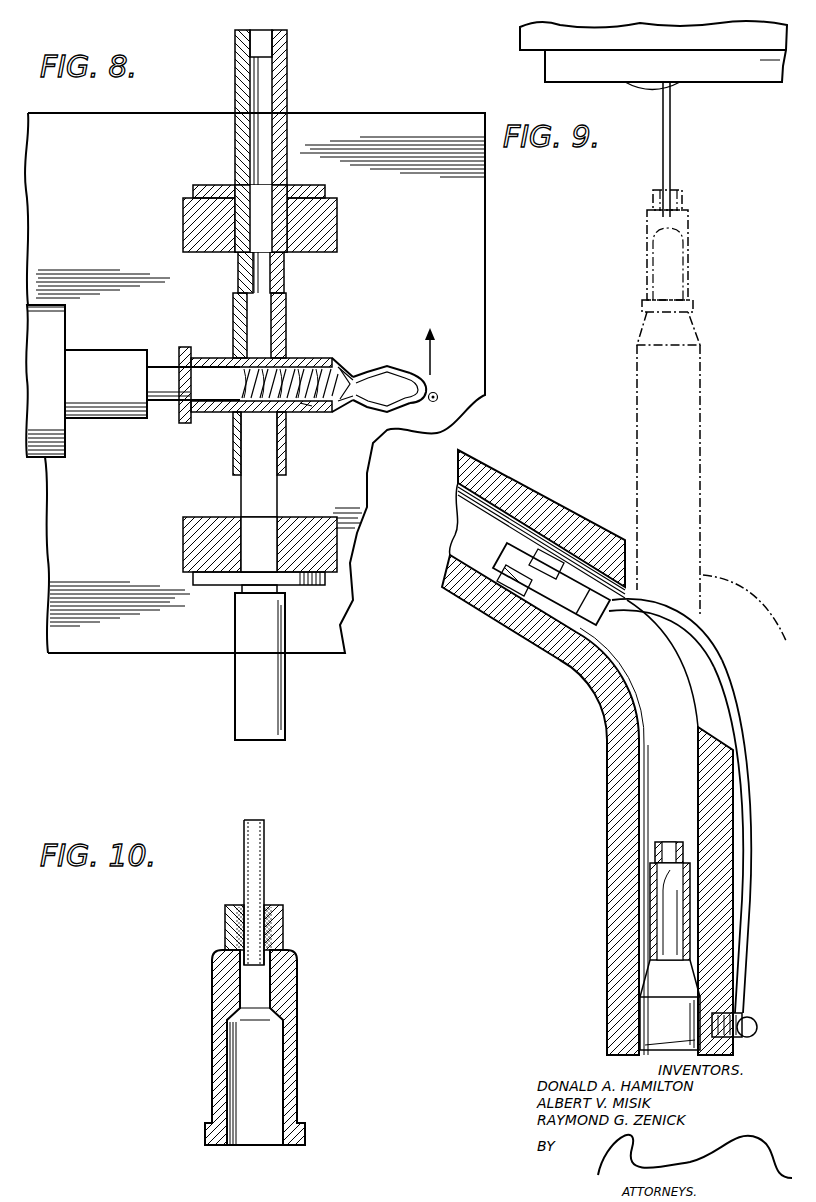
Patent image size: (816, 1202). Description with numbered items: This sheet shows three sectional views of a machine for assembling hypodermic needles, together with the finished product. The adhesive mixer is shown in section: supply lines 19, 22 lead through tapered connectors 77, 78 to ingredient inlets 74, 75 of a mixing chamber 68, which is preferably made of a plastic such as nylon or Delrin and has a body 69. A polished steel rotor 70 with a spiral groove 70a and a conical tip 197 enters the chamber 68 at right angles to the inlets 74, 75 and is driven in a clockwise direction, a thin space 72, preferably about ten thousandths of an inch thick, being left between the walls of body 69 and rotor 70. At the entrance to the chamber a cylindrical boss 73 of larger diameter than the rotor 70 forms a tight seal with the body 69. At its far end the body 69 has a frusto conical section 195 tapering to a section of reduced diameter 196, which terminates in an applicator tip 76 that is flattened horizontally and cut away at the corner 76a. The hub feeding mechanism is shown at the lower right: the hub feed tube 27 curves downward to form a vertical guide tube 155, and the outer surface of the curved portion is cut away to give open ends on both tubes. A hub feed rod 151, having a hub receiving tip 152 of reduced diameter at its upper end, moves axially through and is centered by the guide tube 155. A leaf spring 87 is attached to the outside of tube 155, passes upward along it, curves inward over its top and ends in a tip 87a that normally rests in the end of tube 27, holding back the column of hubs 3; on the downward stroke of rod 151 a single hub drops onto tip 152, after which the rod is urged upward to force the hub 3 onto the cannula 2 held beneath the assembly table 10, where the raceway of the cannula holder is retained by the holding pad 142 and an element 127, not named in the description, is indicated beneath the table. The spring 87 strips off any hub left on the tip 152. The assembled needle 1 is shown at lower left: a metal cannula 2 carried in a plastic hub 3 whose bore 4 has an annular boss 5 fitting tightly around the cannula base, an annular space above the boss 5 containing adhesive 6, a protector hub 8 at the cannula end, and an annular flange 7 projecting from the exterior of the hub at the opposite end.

In FIG. 8, the supply line 19 is at (288, 43).
In FIG. 8, the tapered connector 77 is at (240, 274).
In FIG. 8, the ingredient inlet 74 is at (281, 300).
In FIG. 8, the space 72 is at (282, 357).
In FIG. 8, the cylindrical boss 73 is at (203, 360).
In FIG. 8, the body 69 is at (296, 359).
In FIG. 8, the rotor 70 is at (248, 381).
In FIG. 8, the spiral groove 70a is at (300, 404).
In FIG. 8, the frusto conical section 195 is at (341, 363).
In FIG. 8, the section of reduced diameter 196 is at (370, 367).
In FIG. 8, the conical tip 197 is at (337, 401).
In FIG. 8, the applicator tip 76 is at (409, 400).
In FIG. 8, the corner 76a is at (434, 374).
In FIG. 8, the metal cannula 2 is at (438, 397).
In FIG. 9, the metal cannula 2 is at (675, 168).
In FIG. 10, the metal cannula 2 is at (268, 854).
In FIG. 8, the mixing chamber 68 is at (222, 425).
In FIG. 8, the ingredient inlet 75 is at (287, 458).
In FIG. 8, the tapered connector 78 is at (250, 493).
In FIG. 8, the supply line 22 is at (248, 687).
In FIG. 9, the assembly table 10 is at (512, 38).
In FIG. 9, the wire attachment 127 is at (650, 89).
In FIG. 9, the holding pad 142 is at (748, 77).
In FIG. 10, the plastic hub 3 is at (298, 1078).
In FIG. 9, the hub feed tube 27 is at (538, 505).
In FIG. 9, the guide tube 155 is at (620, 783).
In FIG. 9, the leaf spring 87 is at (740, 590).
In FIG. 9, the tip 87a is at (590, 662).
In FIG. 9, the hub receiving tip 152 is at (665, 928).
In FIG. 9, the hub feed rod 151 is at (650, 1010).
In FIG. 10, the protector hub 8 is at (225, 922).
In FIG. 10, the adhesive 6 is at (283, 921).
In FIG. 10, the annular boss 5 is at (268, 953).
In FIG. 10, the bore 4 is at (255, 989).
In FIG. 10, the needle 1 is at (305, 1015).
In FIG. 10, the annular flange 7 is at (210, 1138).